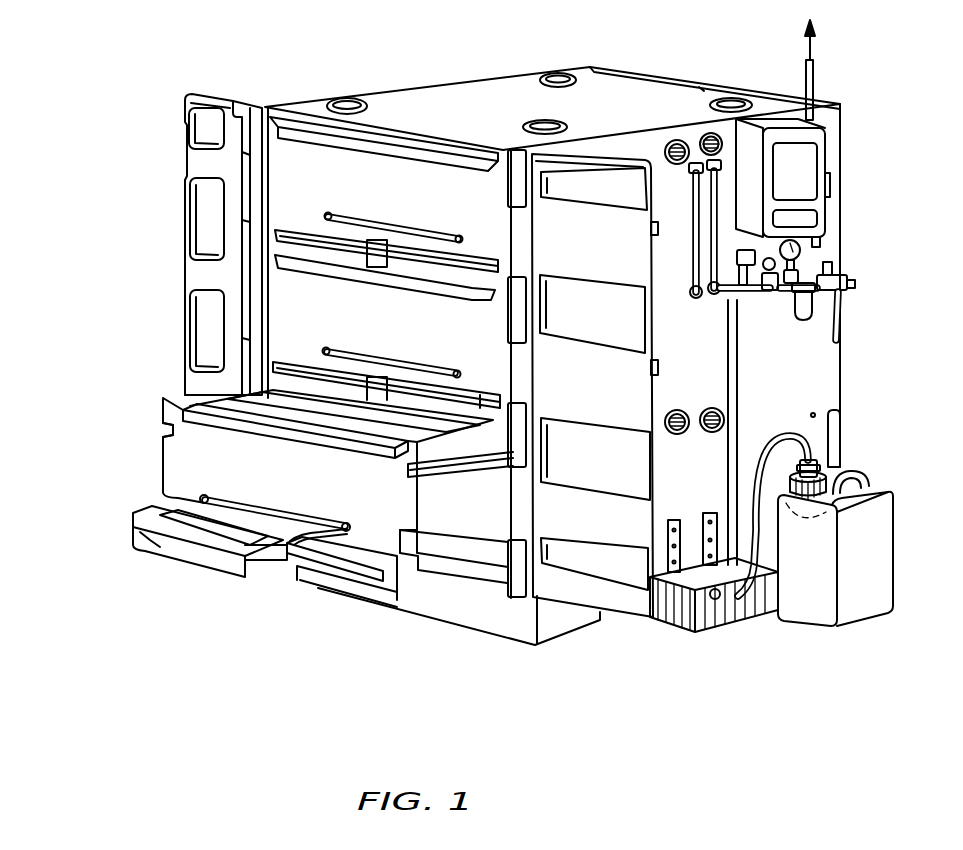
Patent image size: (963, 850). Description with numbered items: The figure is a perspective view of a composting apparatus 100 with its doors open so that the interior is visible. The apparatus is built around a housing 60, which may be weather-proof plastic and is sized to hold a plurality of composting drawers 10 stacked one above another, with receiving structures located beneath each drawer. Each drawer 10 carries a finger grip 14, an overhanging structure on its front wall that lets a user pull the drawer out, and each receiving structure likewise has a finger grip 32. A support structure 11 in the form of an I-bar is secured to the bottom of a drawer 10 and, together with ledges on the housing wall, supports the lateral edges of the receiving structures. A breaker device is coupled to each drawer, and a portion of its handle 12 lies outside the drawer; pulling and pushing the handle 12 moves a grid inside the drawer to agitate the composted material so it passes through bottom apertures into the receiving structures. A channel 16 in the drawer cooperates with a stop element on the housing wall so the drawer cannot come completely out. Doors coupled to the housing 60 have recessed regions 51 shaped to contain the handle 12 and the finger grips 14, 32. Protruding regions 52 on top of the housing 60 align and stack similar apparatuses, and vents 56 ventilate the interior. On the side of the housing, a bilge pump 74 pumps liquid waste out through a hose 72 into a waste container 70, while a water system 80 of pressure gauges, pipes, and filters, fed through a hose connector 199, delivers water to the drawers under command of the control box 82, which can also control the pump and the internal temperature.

The composting apparatus 100 is at (106, 89).
The composting drawer 10 is at (407, 197).
The support structure 11 is at (340, 538).
The handle 12 is at (313, 518).
The finger grip 14 is at (203, 427).
The channel 16 is at (467, 473).
The finger grip 32 is at (173, 540).
The recessed region 51 is at (200, 212).
The protruding region 52 is at (350, 101).
The vent 56 is at (706, 132).
The housing 60 is at (453, 100).
The waste container 70 is at (877, 566).
The hose 72 is at (790, 430).
The bilge pump 74 is at (708, 565).
The water system 80 is at (780, 324).
The control box 82 is at (807, 172).
The hose connector 199 is at (843, 287).